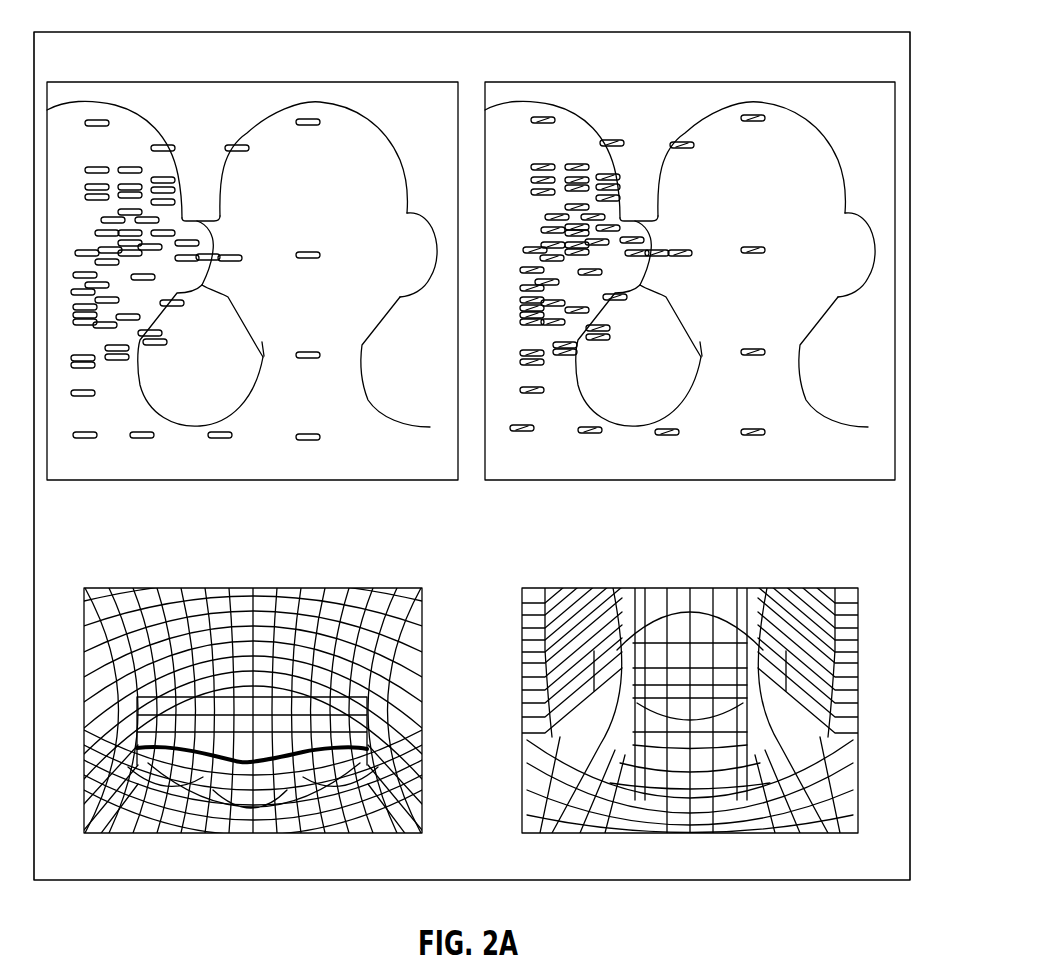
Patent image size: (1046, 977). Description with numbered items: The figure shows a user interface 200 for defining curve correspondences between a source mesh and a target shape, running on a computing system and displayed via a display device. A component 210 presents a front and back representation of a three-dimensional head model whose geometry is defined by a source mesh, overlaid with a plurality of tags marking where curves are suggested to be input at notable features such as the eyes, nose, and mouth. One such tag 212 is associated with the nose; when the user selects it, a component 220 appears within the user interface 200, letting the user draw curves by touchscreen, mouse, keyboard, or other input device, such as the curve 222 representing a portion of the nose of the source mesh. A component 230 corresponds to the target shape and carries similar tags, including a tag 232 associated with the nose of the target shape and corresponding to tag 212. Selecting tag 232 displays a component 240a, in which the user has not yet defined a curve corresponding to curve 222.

The user interface 200 is at (865, 32).
The component 210 is at (265, 262).
The tag 212 is at (85, 278).
The component 220 is at (265, 717).
The curve 222 is at (237, 763).
The component 230 is at (697, 262).
The tag 232 is at (532, 273).
The component 240a is at (813, 588).